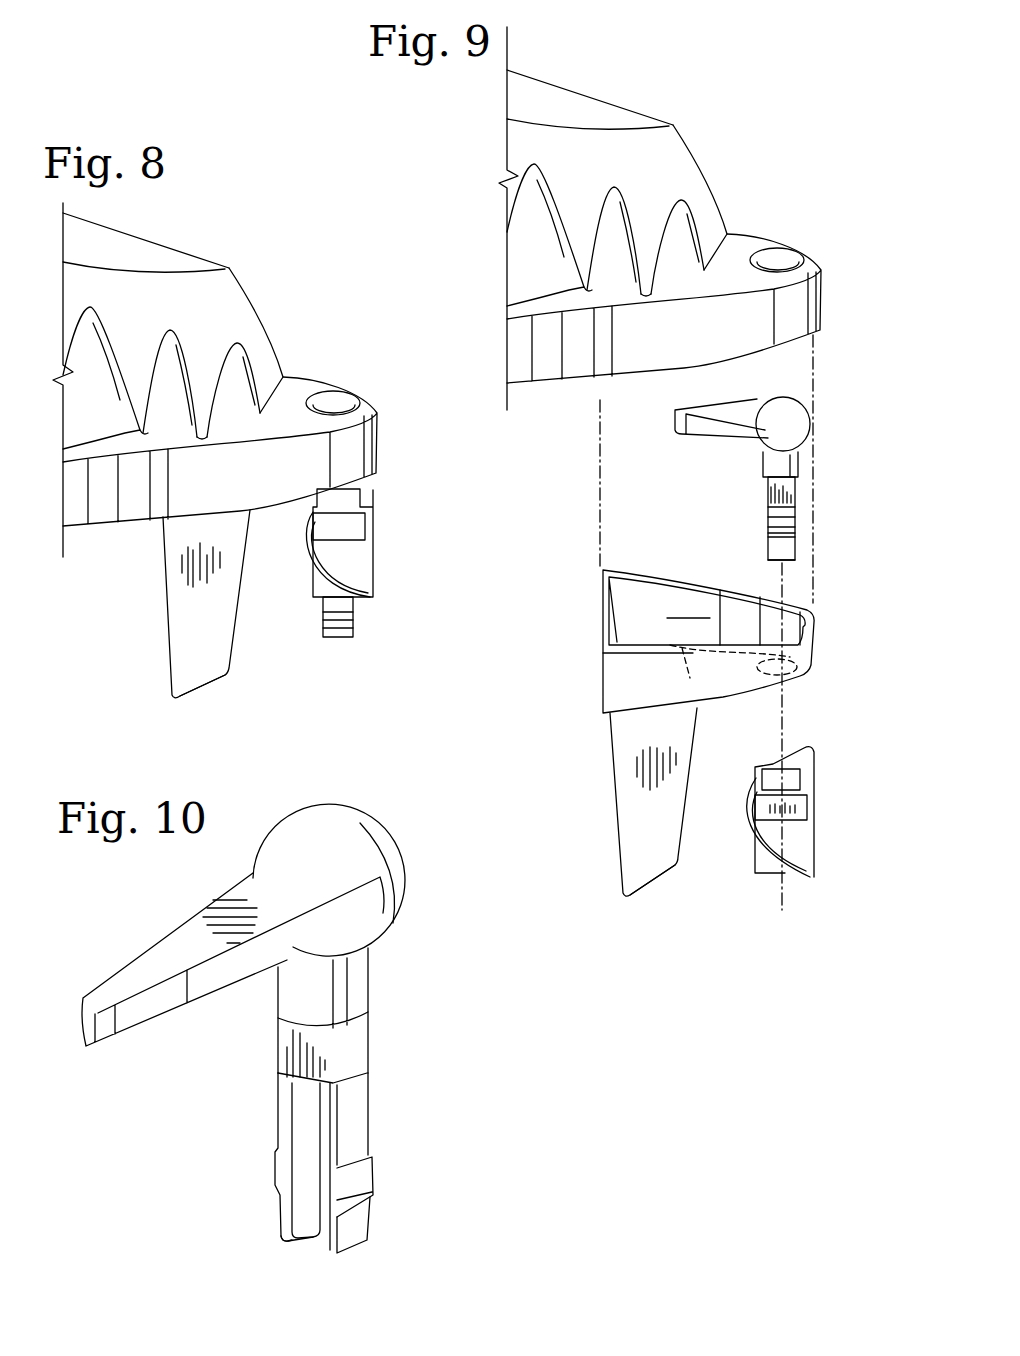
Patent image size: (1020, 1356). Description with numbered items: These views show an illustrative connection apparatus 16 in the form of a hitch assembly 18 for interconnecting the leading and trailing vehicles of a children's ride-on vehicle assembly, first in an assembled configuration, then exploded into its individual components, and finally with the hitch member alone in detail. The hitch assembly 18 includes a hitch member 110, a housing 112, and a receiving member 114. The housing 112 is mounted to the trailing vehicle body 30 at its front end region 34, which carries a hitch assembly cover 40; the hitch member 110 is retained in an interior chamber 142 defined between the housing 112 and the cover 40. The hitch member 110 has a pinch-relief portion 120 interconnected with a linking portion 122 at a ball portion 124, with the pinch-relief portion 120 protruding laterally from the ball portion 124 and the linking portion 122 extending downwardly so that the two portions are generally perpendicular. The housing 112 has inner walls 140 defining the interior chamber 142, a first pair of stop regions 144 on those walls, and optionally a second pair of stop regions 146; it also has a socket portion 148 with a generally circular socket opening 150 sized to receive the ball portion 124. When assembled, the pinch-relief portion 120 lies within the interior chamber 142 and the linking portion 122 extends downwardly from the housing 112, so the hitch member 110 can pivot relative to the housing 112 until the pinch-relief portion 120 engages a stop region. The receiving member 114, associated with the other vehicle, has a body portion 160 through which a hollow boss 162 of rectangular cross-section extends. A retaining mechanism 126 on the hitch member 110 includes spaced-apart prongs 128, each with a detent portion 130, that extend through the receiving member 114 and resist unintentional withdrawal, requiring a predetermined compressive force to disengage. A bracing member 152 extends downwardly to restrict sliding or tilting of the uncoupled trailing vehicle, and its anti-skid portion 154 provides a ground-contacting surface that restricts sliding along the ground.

In FIG. 8, the connection apparatus 16 is at (248, 457).
In FIG. 9, the connection apparatus 16 is at (707, 218).
In FIG. 8, the hitch assembly 18 is at (248, 378).
In FIG. 9, the hitch assembly 18 is at (702, 218).
In FIG. 8, the trailing vehicle body 30 is at (145, 243).
In FIG. 9, the trailing vehicle body 30 is at (585, 97).
In FIG. 8, the front end region 34 is at (284, 316).
In FIG. 9, the front end region 34 is at (721, 167).
In FIG. 8, the hitch assembly cover 40 is at (296, 388).
In FIG. 9, the hitch assembly cover 40 is at (748, 249).
In FIG. 8, the hitch member 110 is at (360, 488).
In FIG. 9, the hitch member 110 is at (765, 468).
In FIG. 10, the hitch member 110 is at (267, 1036).
In FIG. 8, the housing 112 is at (351, 566).
In FIG. 9, the housing 112 is at (717, 712).
In FIG. 8, the receiving member 114 is at (370, 562).
In FIG. 9, the receiving member 114 is at (797, 812).
In FIG. 9, the pinch-relief portion 120 is at (712, 413).
In FIG. 10, the pinch-relief portion 120 is at (150, 960).
In FIG. 9, the linking portion 122 is at (799, 470).
In FIG. 10, the linking portion 122 is at (266, 1060).
In FIG. 9, the ball portion 124 is at (795, 428).
In FIG. 10, the ball portion 124 is at (342, 828).
In FIG. 9, the retaining mechanism 126 is at (801, 510).
In FIG. 10, the retaining mechanism 126 is at (386, 1231).
In FIG. 9, the prongs 128 is at (767, 557).
In FIG. 10, the prongs 128 is at (333, 1255).
In FIG. 9, the detent portion 130 is at (797, 527).
In FIG. 10, the detent portion 130 is at (275, 1175).
In FIG. 9, the inner walls 140 is at (637, 605).
In FIG. 9, the interior chamber 142 is at (729, 622).
In FIG. 9, the first pair of stop regions 144 is at (688, 605).
In FIG. 9, the second pair of stop regions 146 is at (673, 642).
In FIG. 9, the socket portion 148 is at (804, 681).
In FIG. 9, the socket opening 150 is at (790, 660).
In FIG. 8, the bracing member 152 is at (167, 625).
In FIG. 9, the bracing member 152 is at (615, 835).
In FIG. 8, the anti-skid portion 154 is at (203, 687).
In FIG. 9, the anti-skid portion 154 is at (653, 877).
In FIG. 9, the body portion 160 is at (800, 857).
In FIG. 8, the boss 162 is at (338, 554).
In FIG. 9, the boss 162 is at (763, 778).